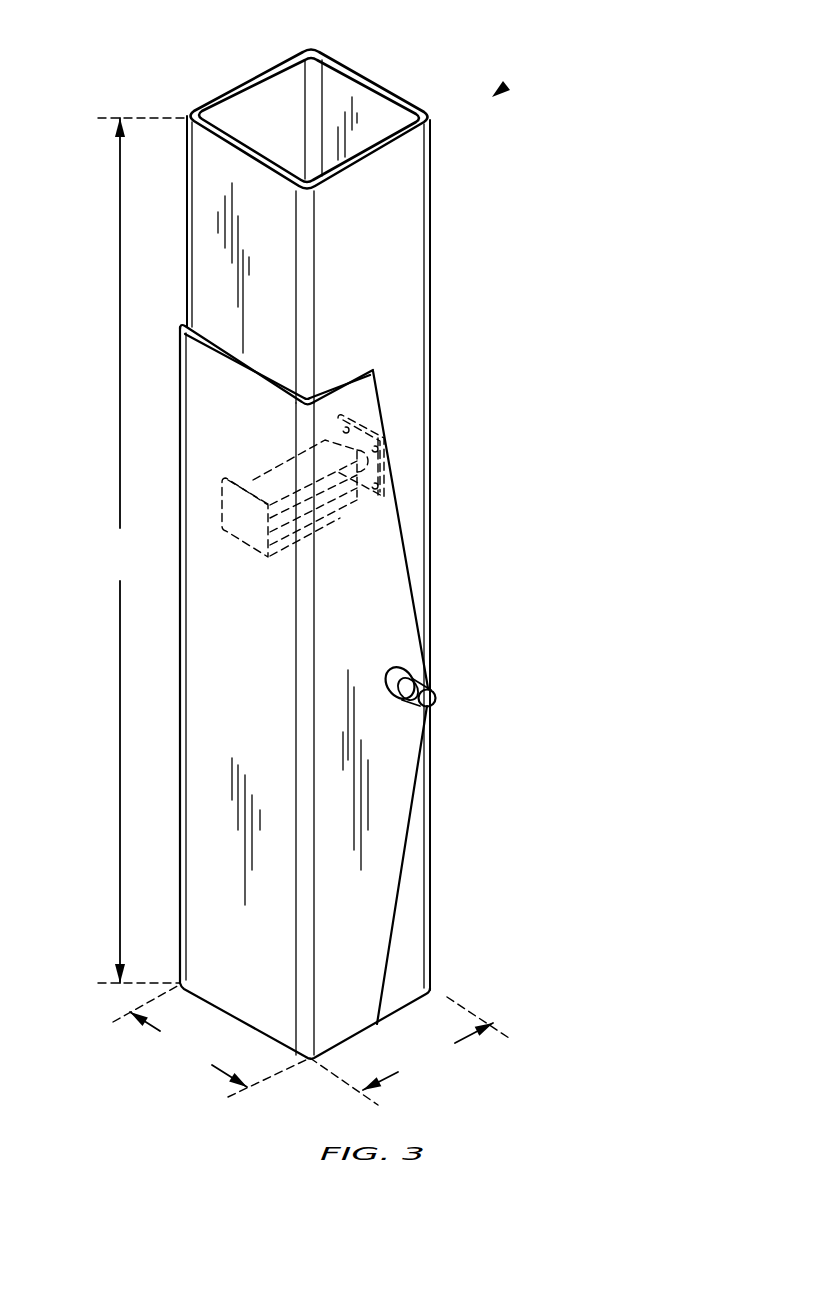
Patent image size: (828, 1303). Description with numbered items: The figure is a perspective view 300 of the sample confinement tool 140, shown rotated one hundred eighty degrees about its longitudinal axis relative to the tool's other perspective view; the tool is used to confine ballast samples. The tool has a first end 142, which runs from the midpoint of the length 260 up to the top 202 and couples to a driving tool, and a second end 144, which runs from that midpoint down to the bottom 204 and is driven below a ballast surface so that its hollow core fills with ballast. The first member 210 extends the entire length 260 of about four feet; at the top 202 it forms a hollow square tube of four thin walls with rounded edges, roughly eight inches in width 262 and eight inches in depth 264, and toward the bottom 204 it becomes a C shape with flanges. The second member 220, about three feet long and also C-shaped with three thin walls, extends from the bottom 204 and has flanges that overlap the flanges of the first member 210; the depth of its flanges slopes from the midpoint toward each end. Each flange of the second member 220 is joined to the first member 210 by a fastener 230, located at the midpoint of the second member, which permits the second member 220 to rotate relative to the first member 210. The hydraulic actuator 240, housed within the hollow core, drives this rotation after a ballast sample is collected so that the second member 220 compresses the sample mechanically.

The sample confinement tool 140 is at (402, 228).
The first end 142 is at (407, 180).
The second end 144 is at (403, 932).
The top 202 is at (370, 77).
The bottom 204 is at (410, 1007).
The first member 210 is at (383, 277).
The second member 220 is at (226, 654).
The fastener 230 is at (433, 703).
The hydraulic actuator 240 is at (333, 505).
The length 260 is at (139, 550).
The width 262 is at (211, 1040).
The depth 264 is at (411, 1051).
The perspective view 300 is at (506, 86).